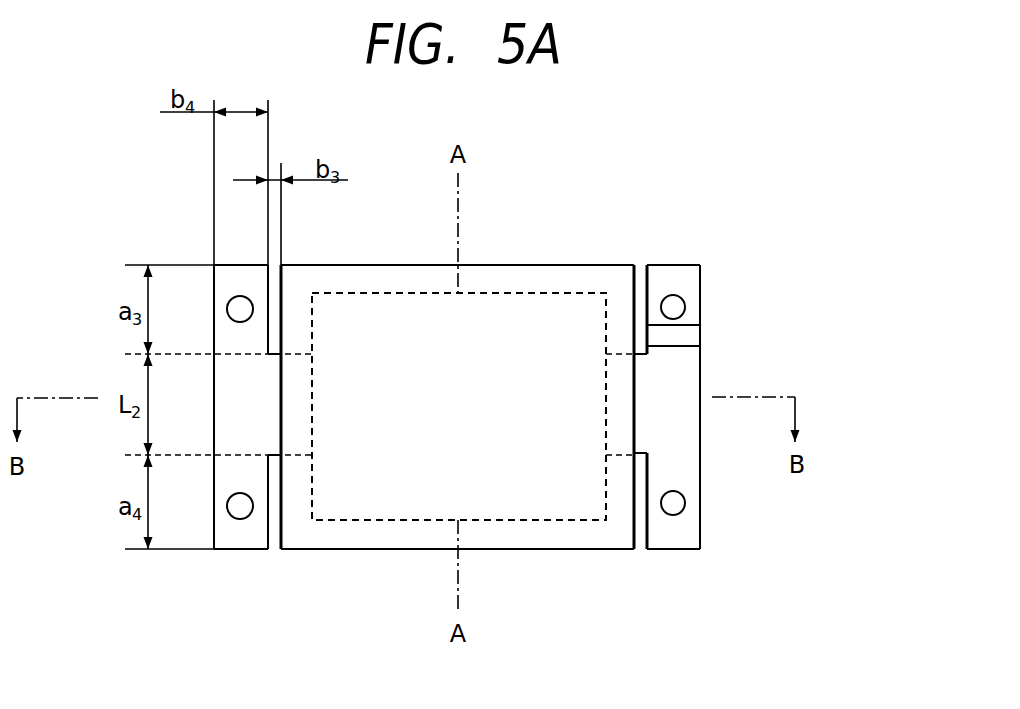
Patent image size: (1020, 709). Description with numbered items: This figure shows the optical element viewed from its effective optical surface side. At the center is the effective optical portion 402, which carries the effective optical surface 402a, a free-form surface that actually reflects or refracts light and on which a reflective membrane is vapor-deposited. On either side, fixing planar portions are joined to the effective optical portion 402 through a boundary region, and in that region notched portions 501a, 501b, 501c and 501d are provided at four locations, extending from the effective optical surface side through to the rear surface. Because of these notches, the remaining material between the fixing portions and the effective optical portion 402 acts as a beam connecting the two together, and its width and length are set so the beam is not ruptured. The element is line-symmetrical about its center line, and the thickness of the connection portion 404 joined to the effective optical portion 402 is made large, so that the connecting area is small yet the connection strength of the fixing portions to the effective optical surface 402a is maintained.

The effective optical portion 402 is at (507, 293).
The effective optical surface 402a is at (405, 479).
The connection portion 404 is at (645, 400).
The notched portion 501a is at (280, 302).
The notched portion 501b is at (275, 513).
The notched portion 501c is at (640, 302).
The notched portion 501d is at (641, 502).